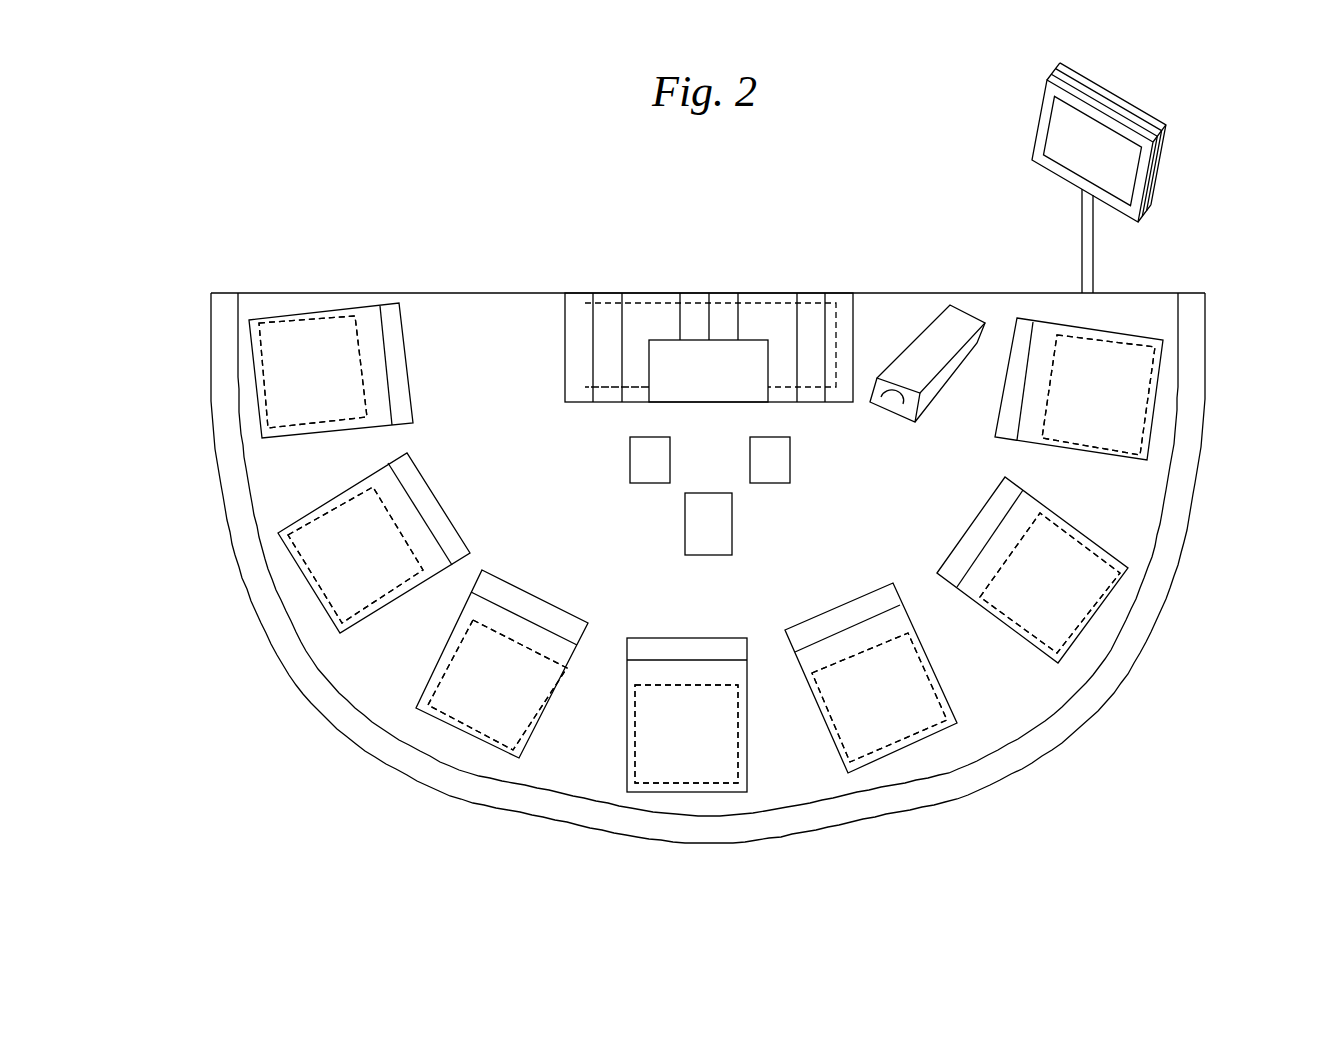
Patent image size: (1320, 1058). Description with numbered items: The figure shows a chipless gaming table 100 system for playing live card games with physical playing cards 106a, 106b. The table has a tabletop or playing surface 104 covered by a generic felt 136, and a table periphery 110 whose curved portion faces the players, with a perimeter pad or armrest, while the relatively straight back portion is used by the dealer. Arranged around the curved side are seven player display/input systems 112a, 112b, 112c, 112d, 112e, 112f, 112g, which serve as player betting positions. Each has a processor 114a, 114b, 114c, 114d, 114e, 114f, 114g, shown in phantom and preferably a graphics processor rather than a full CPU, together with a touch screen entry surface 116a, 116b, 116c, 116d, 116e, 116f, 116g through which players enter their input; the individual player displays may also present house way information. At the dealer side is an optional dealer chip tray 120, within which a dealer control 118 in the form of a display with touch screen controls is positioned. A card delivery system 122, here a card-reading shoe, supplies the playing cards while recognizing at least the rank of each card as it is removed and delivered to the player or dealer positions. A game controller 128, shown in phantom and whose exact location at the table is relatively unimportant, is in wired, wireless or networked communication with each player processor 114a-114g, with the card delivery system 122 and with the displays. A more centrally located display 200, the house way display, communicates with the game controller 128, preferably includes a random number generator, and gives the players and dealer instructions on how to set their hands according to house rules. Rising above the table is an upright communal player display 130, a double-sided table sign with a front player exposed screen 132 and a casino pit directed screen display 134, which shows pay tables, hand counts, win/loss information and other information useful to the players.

The chipless gaming table 100 is at (340, 802).
The playing surface 104 is at (581, 500).
The playing card 106a is at (647, 477).
The playing card 106b is at (770, 477).
The table periphery 110 is at (484, 292).
The player display/input system 112a is at (272, 317).
The player display/input system 112b is at (296, 525).
The player display/input system 112c is at (421, 711).
The player display/input system 112d is at (627, 778).
The player display/input system 112e is at (848, 760).
The player display/input system 112f is at (1057, 662).
The player display/input system 112g is at (1130, 458).
The processor 114a is at (262, 360).
The processor 114b is at (303, 563).
The processor 114c is at (458, 723).
The processor 114d is at (680, 787).
The processor 114e is at (883, 748).
The processor 114f is at (1077, 630).
The processor 114g is at (1143, 418).
The touch screen entry surface 116a is at (287, 378).
The touch screen entry surface 116b is at (337, 585).
The touch screen entry surface 116c is at (493, 725).
The touch screen entry surface 116d is at (720, 767).
The touch screen entry surface 116e is at (918, 717).
The touch screen entry surface 116f is at (1080, 583).
The touch screen entry surface 116g is at (1140, 370).
The dealer control 118 is at (753, 353).
The dealer chip tray 120 is at (703, 303).
The card delivery system 122 is at (952, 343).
The game controller 128 is at (837, 330).
The communal player display 130 is at (1004, 114).
The front player exposed screen 132 is at (1132, 222).
The casino pit directed screen display 134 is at (1157, 118).
The generic felt 136 is at (443, 333).
The display 200 is at (698, 545).